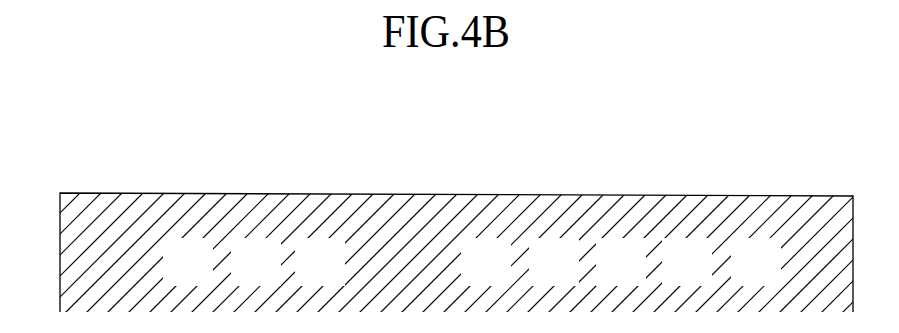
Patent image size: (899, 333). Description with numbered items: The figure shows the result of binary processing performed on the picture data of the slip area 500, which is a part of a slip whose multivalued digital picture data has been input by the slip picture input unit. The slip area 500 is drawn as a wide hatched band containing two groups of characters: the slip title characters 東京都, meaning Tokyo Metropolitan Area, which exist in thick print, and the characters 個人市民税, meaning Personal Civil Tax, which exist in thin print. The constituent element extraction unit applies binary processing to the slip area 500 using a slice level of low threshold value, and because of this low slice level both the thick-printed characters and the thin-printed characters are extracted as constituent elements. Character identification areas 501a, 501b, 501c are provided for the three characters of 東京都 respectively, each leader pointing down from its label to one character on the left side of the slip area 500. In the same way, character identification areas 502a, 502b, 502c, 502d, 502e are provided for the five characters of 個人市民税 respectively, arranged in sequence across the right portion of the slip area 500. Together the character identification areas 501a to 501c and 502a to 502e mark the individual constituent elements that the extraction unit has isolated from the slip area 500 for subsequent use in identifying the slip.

The slip area 500 is at (81, 176).
The character identification area 501a is at (177, 238).
The character identification area 501b is at (252, 238).
The character identification area 501c is at (327, 235).
The character identification area 502a is at (490, 231).
The character identification area 502b is at (550, 232).
The character identification area 502c is at (636, 238).
The character identification area 502d is at (707, 238).
The character identification area 502e is at (773, 238).